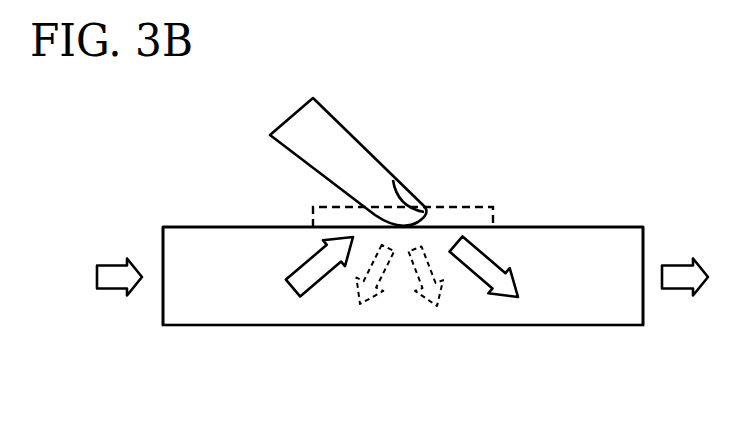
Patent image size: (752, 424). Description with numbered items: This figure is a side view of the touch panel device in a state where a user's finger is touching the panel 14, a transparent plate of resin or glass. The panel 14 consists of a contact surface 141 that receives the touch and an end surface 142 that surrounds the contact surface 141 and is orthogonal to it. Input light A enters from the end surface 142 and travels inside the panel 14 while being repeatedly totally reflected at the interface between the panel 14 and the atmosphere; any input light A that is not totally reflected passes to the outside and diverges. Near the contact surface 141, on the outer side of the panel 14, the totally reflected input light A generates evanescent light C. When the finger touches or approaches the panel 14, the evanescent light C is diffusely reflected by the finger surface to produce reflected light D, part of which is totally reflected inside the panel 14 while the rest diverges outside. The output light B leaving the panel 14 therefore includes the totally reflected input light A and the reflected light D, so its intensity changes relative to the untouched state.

The panel 14 is at (520, 237).
The contact surface 141 is at (597, 227).
The end surface 142 is at (163, 307).
The input light A is at (108, 265).
The output light B is at (677, 265).
The evanescent light C is at (442, 207).
The reflected light D is at (432, 302).